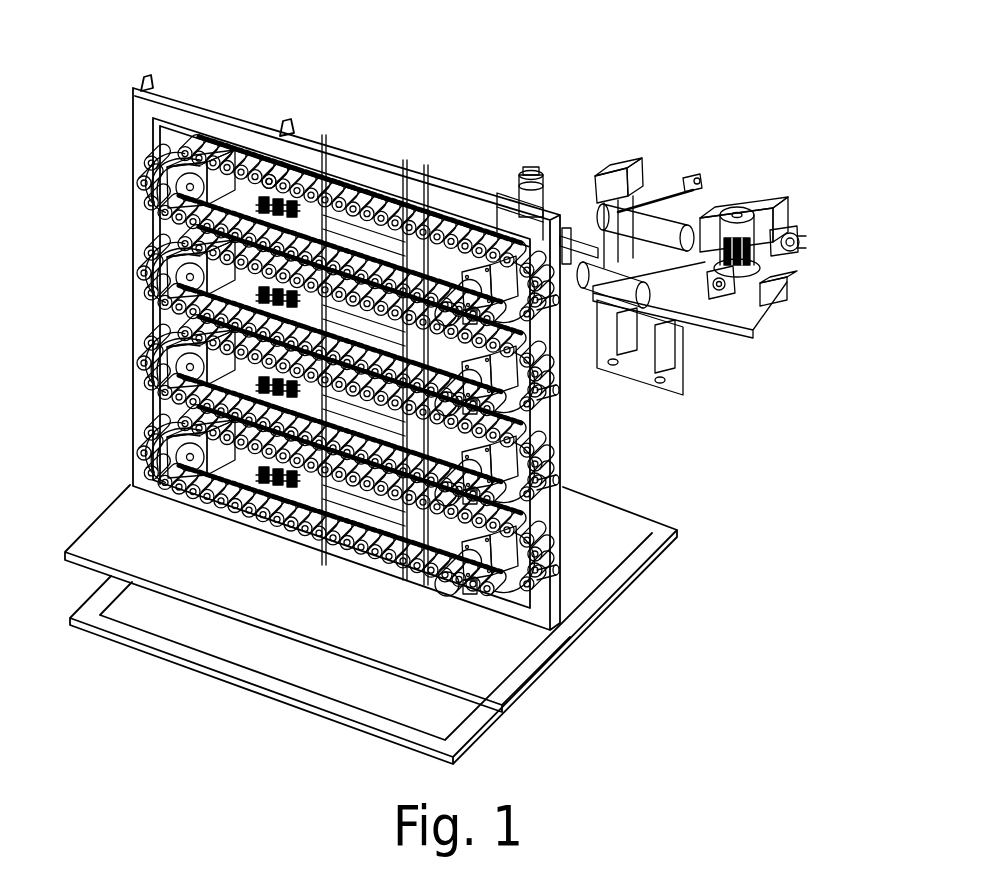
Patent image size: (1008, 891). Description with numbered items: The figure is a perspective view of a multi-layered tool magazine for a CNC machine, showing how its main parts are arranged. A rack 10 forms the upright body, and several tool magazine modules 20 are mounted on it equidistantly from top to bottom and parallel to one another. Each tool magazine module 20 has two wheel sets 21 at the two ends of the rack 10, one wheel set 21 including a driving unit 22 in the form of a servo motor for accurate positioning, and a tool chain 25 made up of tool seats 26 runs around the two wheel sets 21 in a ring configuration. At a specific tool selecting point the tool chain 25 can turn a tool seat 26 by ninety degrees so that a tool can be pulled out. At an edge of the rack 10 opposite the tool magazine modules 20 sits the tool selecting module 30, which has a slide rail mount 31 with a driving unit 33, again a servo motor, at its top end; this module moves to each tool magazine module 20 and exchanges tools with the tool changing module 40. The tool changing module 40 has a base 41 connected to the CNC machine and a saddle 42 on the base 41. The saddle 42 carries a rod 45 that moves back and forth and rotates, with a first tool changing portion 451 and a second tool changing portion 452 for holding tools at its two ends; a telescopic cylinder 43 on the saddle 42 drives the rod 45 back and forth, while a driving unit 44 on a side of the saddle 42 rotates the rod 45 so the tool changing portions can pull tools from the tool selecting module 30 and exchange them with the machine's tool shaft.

The rack 10 is at (350, 160).
The tool magazine module 20 is at (135, 202).
The wheel set 21 is at (167, 183).
The driving unit 22 is at (552, 323).
The tool chain 25 is at (237, 143).
The tool seat 26 is at (262, 172).
The tool selecting module 30 is at (490, 157).
The slide rail mount 31 is at (500, 193).
The driving unit 33 is at (530, 167).
The tool changing module 40 is at (737, 160).
The base 41 is at (713, 320).
The saddle 42 is at (753, 217).
The telescopic cylinder 43 is at (780, 237).
The driving unit 44 is at (760, 263).
The rod 45 is at (650, 187).
The first tool changing portion 451 is at (583, 215).
The second tool changing portion 452 is at (665, 178).